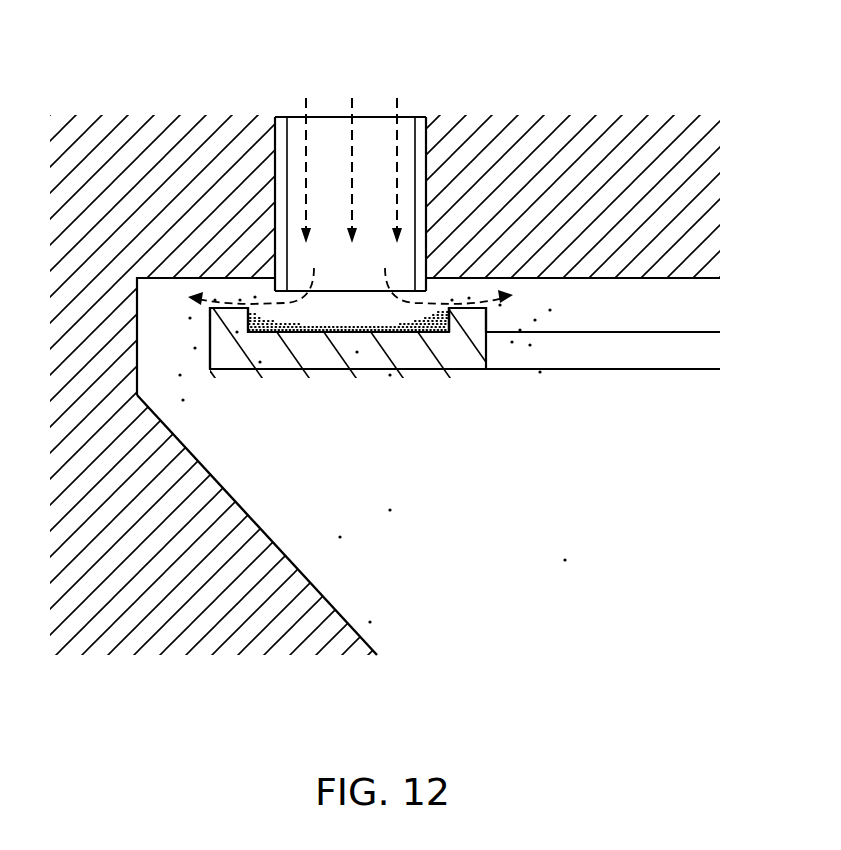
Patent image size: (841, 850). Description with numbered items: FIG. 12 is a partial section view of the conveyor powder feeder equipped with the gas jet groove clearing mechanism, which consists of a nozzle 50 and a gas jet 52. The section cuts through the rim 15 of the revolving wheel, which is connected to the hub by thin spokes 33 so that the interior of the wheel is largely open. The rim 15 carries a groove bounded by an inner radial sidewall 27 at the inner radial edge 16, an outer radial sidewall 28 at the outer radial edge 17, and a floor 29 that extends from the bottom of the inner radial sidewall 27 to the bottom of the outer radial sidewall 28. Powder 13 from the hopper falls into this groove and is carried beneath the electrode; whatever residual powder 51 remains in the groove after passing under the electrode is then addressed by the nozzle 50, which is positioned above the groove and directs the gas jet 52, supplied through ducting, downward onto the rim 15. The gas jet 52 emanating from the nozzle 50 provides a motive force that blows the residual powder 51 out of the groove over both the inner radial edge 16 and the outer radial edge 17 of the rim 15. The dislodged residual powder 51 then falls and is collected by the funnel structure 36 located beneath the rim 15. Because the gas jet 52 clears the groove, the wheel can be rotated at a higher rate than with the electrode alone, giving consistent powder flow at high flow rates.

The powder particles 13 is at (427, 333).
The rim 15 is at (397, 369).
The inner radial edge 16 is at (486, 340).
The outer radial edge 17 is at (213, 368).
The inner radial sidewall 27 is at (450, 322).
The outer radial sidewall 28 is at (258, 366).
The floor 29 is at (315, 369).
The spokes 33 is at (638, 353).
The funnel structure 36 is at (338, 608).
The nozzle 50 is at (297, 138).
The residual powder 51 is at (340, 332).
The gas jet 52 is at (353, 108).